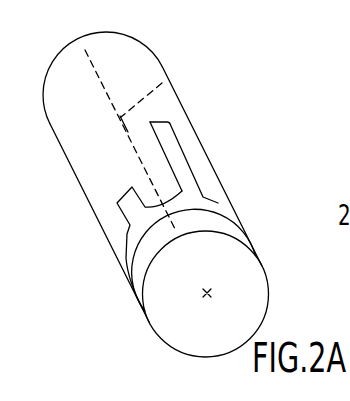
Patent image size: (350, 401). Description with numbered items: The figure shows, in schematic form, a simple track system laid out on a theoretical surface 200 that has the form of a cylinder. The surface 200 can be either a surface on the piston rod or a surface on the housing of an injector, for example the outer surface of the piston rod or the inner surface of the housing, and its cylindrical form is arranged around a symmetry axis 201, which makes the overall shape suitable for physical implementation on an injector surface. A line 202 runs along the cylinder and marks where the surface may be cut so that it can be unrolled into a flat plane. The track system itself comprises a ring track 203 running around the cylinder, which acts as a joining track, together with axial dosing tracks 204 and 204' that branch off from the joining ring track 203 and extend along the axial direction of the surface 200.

The surface 200 is at (148, 59).
The symmetry axis 201 is at (207, 293).
The cutting line 202 is at (162, 83).
The ring track 203 is at (220, 207).
The axial dosing track 204 is at (135, 236).
The axial dosing track 204' is at (203, 157).